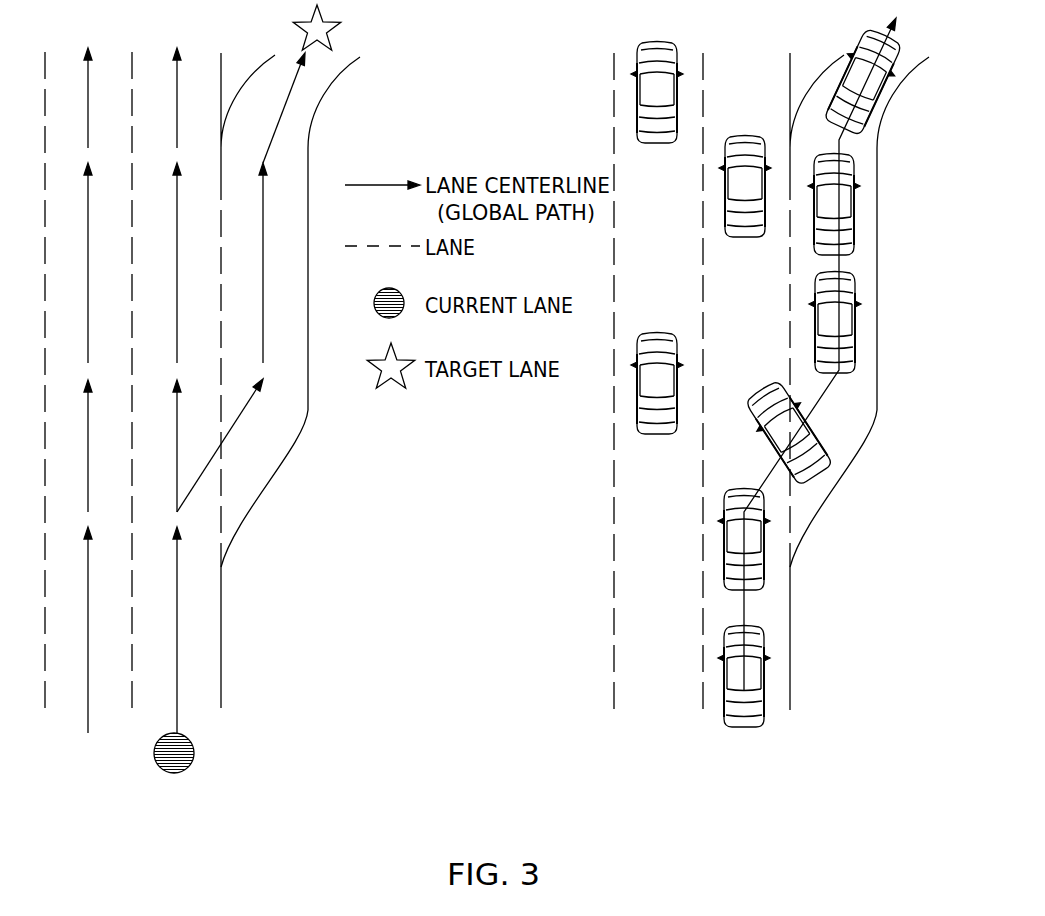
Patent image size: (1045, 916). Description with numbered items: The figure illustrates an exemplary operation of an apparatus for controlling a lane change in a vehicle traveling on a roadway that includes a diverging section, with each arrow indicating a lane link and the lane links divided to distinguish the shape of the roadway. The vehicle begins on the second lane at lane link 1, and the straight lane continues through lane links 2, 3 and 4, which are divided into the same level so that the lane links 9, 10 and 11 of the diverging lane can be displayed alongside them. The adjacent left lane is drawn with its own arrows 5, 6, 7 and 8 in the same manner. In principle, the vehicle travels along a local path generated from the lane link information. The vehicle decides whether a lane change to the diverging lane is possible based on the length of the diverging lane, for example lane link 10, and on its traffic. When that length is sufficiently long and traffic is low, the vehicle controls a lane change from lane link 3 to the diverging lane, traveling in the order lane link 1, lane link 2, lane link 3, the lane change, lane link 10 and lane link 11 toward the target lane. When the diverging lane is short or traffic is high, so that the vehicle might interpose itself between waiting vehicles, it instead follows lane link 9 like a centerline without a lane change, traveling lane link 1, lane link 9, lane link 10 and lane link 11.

The lane link 1 is at (161, 630).
The lane link 2 is at (161, 446).
The lane link 3 is at (161, 263).
The lane link 4 is at (161, 98).
The left lane centerline segment 5 is at (71, 630).
The left lane centerline segment 6 is at (71, 446).
The left lane centerline segment 7 is at (71, 263).
The left lane centerline segment 8 is at (71, 98).
The lane link 9 is at (220, 445).
The lane link 10 is at (281, 263).
The lane link 11 is at (291, 108).